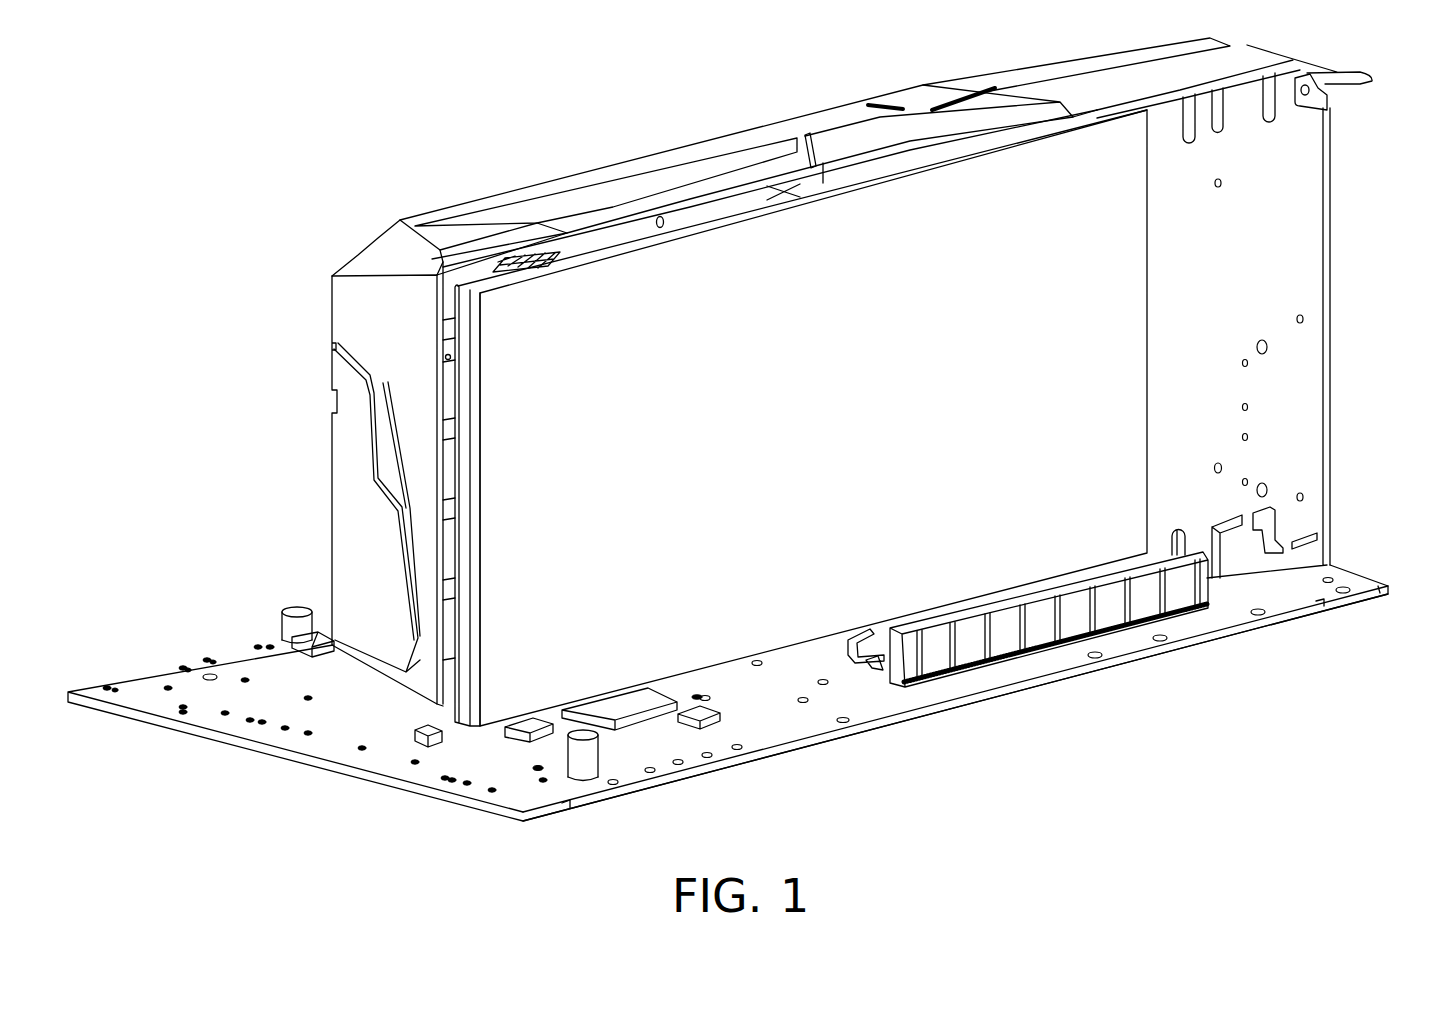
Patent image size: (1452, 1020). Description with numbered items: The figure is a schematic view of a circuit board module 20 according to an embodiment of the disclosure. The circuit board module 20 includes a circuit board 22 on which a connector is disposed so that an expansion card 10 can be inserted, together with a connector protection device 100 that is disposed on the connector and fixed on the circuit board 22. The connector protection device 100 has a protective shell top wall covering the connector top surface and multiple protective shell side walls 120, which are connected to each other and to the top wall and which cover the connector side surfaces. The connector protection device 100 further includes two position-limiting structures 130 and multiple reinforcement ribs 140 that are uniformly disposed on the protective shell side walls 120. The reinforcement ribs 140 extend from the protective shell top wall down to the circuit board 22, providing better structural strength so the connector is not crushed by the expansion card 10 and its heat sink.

The expansion card 10 is at (1270, 258).
The circuit board module 20 is at (753, 693).
The circuit board 22 is at (943, 712).
The connector protection device 100 is at (794, 420).
The protective shell side walls 120 is at (1073, 662).
The position-limiting structures 130 is at (863, 664).
The reinforcement ribs 140 is at (1127, 598).